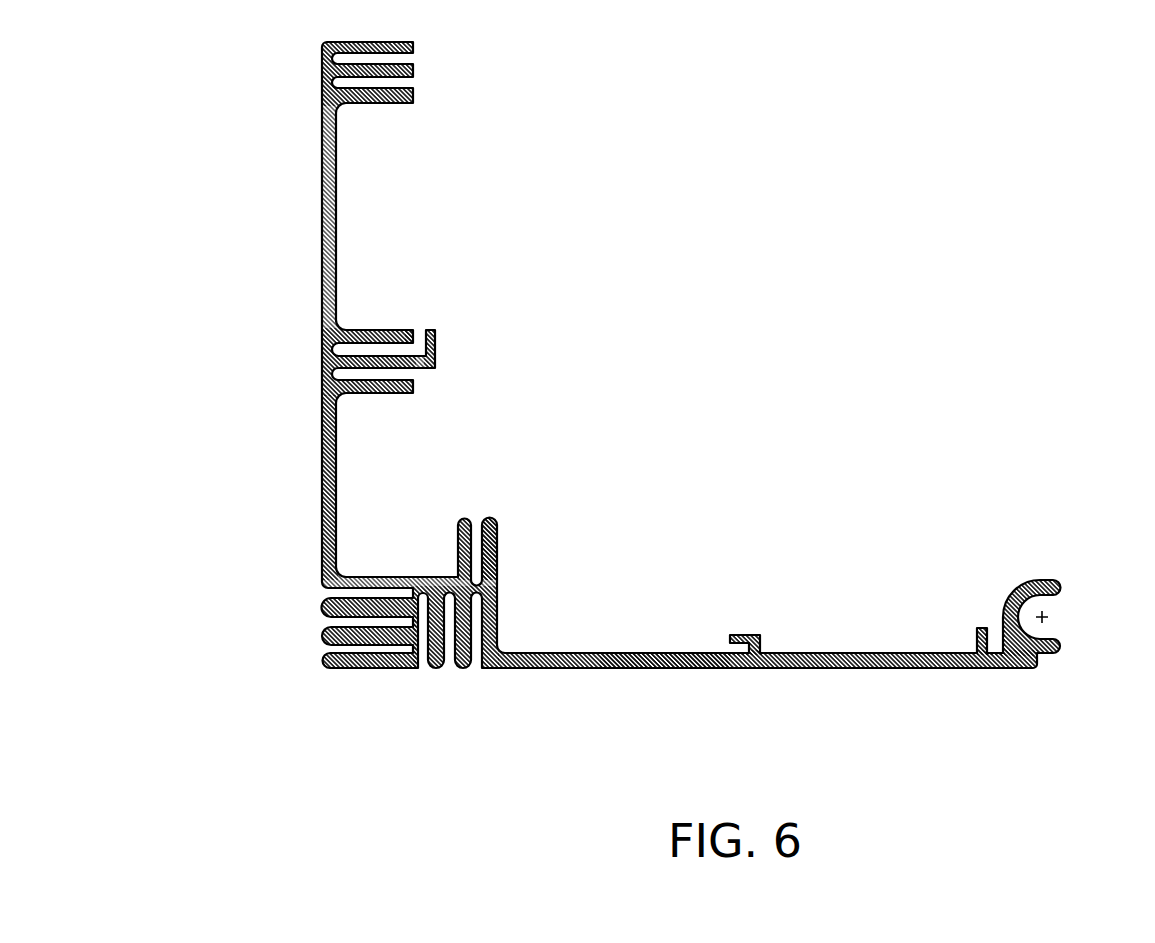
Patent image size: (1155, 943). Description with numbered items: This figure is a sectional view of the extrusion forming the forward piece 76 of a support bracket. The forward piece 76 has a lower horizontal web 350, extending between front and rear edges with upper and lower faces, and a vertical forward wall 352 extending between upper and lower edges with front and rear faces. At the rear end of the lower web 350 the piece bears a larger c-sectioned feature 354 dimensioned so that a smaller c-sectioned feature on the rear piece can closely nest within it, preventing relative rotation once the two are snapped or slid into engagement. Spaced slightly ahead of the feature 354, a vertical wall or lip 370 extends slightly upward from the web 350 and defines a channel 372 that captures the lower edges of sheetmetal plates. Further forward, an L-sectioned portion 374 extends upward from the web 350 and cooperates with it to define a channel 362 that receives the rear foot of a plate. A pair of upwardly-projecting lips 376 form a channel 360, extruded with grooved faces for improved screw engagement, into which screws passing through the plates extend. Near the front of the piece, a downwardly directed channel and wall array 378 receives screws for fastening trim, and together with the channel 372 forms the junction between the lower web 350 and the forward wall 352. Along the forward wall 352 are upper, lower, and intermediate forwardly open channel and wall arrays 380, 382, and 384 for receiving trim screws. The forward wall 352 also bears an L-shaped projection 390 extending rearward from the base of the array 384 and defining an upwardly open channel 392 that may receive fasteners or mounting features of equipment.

The forward piece/member 76 is at (868, 706).
The lower horizontal web 350 is at (693, 668).
The vertical forward wall 352 is at (336, 470).
The c-sectioned feature 354 is at (1053, 570).
The channel 360 is at (476, 507).
The channel 362 is at (705, 639).
The vertical wall or lip 370 is at (976, 631).
The channel 372 is at (992, 607).
The L-sectioned portion 374 is at (755, 614).
The upwardly-projecting lips 376 is at (496, 533).
The downwardly directed channel and wall array 378 is at (448, 694).
The upper forwardly open channel and wall array 380 is at (278, 75).
The lower forwardly open channel and wall array 382 is at (290, 622).
The intermediate forwardly open channel and wall array 384 is at (285, 363).
The L-shaped projection 390 is at (460, 328).
The channel 392 is at (420, 320).